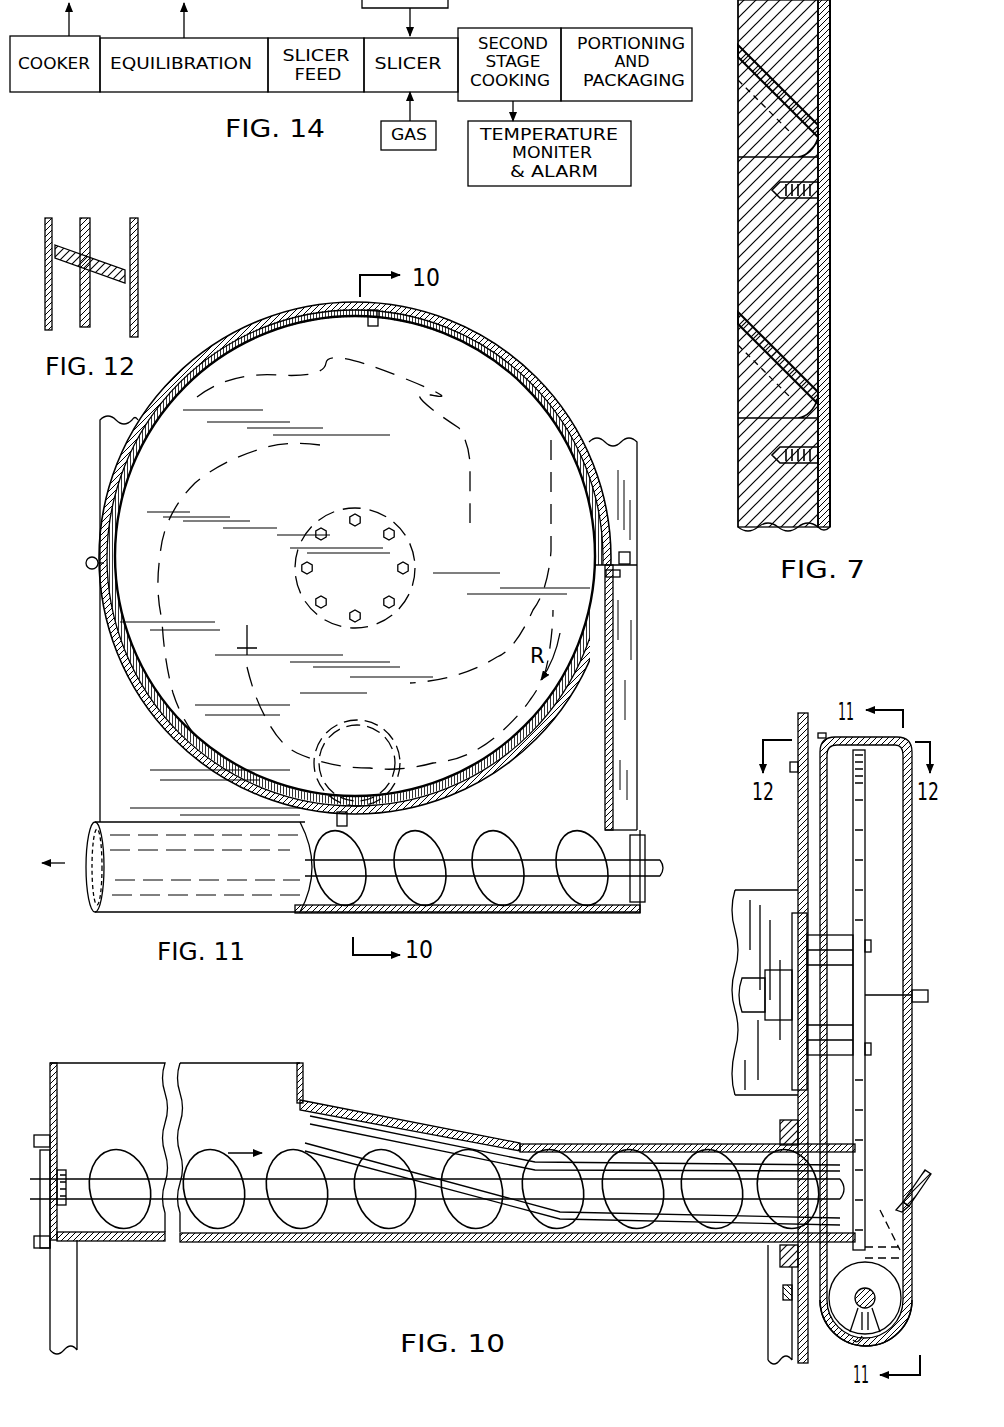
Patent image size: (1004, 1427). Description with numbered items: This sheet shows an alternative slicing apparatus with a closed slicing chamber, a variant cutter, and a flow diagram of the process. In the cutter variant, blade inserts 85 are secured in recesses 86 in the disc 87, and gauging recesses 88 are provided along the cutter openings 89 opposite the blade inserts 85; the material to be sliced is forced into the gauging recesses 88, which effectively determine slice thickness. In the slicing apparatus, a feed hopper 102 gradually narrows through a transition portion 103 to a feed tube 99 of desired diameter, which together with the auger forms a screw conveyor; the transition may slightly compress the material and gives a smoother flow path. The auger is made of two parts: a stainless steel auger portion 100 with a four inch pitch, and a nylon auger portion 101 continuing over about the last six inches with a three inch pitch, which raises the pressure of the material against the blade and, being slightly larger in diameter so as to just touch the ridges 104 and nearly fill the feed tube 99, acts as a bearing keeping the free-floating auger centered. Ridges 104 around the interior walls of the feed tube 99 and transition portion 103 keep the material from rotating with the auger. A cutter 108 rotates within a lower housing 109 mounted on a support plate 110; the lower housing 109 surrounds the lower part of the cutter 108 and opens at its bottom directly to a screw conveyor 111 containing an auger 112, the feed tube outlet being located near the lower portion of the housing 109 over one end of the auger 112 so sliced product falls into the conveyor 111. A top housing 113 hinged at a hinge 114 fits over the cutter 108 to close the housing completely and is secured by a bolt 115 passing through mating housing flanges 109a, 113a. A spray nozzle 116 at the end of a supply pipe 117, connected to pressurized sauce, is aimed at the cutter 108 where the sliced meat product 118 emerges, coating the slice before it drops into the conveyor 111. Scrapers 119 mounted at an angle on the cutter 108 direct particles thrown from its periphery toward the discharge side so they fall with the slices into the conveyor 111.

In FIG. 7, the blade inserts 85 is at (824, 160).
In FIG. 7, the recesses 86 is at (822, 190).
In FIG. 7, the disc 87 is at (822, 513).
In FIG. 7, the gauging recesses 88 is at (824, 58).
In FIG. 7, the cutter openings 89 is at (752, 121).
In FIG. 11, the feed tube 99 is at (407, 747).
In FIG. 10, the feed tube 99 is at (722, 1143).
In FIG. 10, the auger portion 100 is at (480, 1246).
In FIG. 10, the auger portion 101 is at (718, 1245).
In FIG. 10, the feed hopper 102 is at (282, 1066).
In FIG. 10, the transition portion 103 is at (413, 1148).
In FIG. 10, the ridges 104 is at (388, 1124).
In FIG. 12, the cutter 108 is at (92, 222).
In FIG. 11, the cutter 108 is at (533, 418).
In FIG. 10, the cutter 108 is at (855, 855).
In FIG. 11, the lower housing 109 is at (612, 740).
In FIG. 10, the lower housing 109 is at (906, 1092).
In FIG. 11, the housing flange 109a is at (637, 573).
In FIG. 11, the support plate 110 is at (628, 648).
In FIG. 10, the support plate 110 is at (772, 1325).
In FIG. 11, the screw conveyor 111 is at (496, 916).
In FIG. 10, the screw conveyor 111 is at (852, 1340).
In FIG. 11, the auger 112 is at (560, 835).
In FIG. 10, the auger 112 is at (888, 1322).
In FIG. 12, the top housing 113 is at (138, 300).
In FIG. 11, the top housing 113 is at (492, 338).
In FIG. 10, the top housing 113 is at (905, 920).
In FIG. 11, the housing flange 113a is at (638, 562).
In FIG. 11, the hinge 114 is at (88, 568).
In FIG. 11, the bolt 115 is at (625, 556).
In FIG. 10, the spray nozzle 116 is at (913, 1200).
In FIG. 10, the supply pipe 117 is at (928, 1176).
In FIG. 10, the sliced meat product 118 is at (880, 1250).
In FIG. 12, the scrapers 119 is at (112, 265).
In FIG. 11, the scrapers 119 is at (380, 324).
In FIG. 10, the scrapers 119 is at (821, 733).